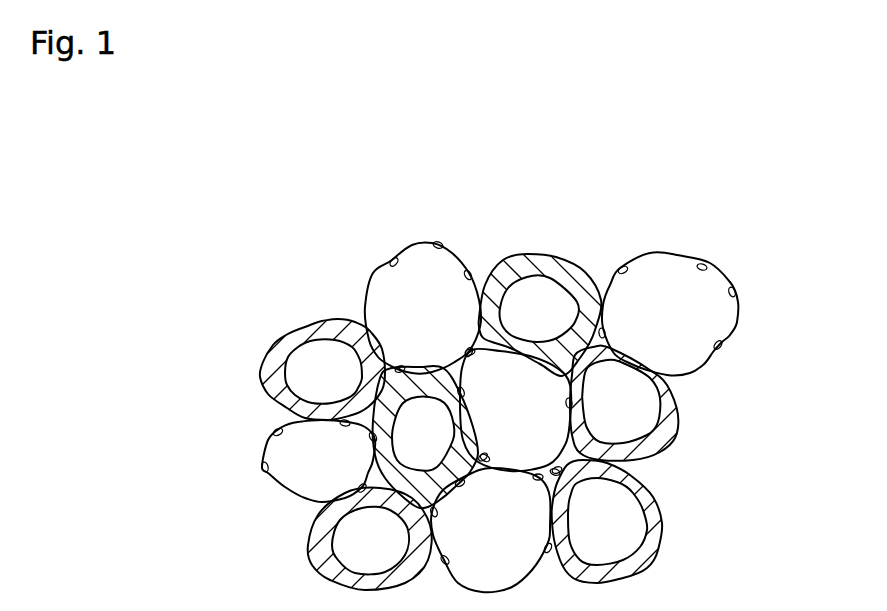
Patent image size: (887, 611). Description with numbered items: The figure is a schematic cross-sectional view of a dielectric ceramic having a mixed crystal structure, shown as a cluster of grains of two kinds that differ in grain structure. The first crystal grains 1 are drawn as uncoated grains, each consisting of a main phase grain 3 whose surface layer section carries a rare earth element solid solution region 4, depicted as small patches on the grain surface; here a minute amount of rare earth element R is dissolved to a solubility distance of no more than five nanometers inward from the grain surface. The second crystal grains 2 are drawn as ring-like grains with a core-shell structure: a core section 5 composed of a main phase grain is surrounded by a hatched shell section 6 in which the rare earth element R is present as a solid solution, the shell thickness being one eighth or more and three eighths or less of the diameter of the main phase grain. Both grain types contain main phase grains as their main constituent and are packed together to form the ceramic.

The first crystal grain 1 is at (435, 166).
The second crystal grain 2 is at (320, 226).
The main phase grain 3 is at (432, 308).
The rare earth element solid solution region 4 is at (391, 258).
The core section 5 is at (330, 350).
The shell section 6 is at (293, 332).